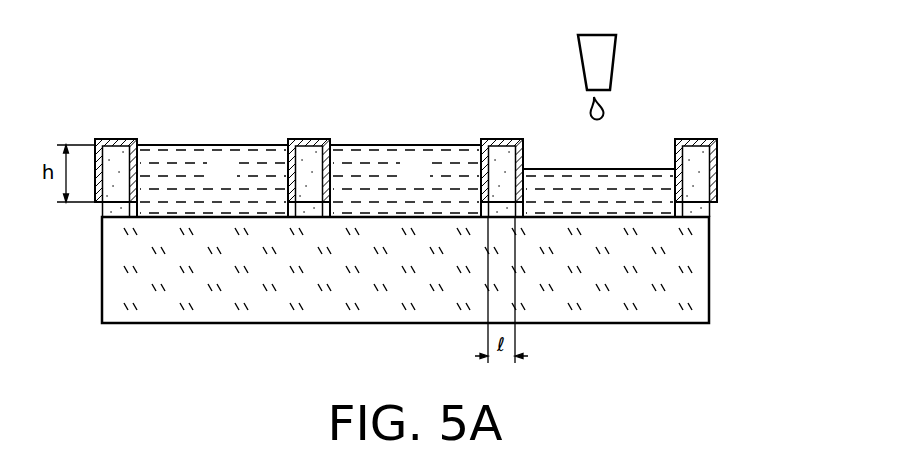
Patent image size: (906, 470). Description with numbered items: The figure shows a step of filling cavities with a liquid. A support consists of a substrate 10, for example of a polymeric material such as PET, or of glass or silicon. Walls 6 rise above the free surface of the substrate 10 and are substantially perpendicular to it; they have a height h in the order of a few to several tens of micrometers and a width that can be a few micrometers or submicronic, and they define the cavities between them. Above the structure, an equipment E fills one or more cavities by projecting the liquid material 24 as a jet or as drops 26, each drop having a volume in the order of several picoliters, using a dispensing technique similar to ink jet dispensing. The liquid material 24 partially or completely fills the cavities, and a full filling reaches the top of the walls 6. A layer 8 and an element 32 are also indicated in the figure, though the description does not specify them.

The walls 6 is at (434, 146).
The hole injection layer (lower layer) 8 is at (697, 212).
The substrate 10 is at (690, 285).
The liquid material 24 is at (210, 183).
The drops 26 is at (628, 180).
The partition wall top portion 32 is at (494, 143).
The equipment E is at (603, 53).